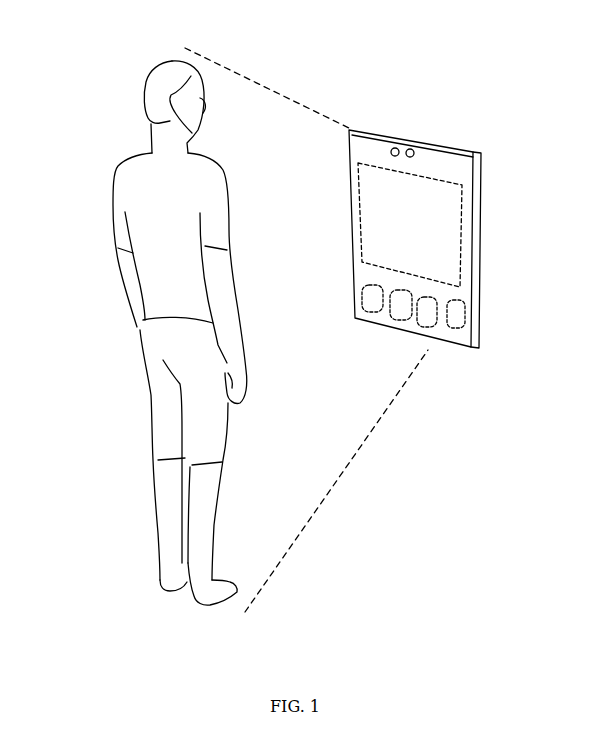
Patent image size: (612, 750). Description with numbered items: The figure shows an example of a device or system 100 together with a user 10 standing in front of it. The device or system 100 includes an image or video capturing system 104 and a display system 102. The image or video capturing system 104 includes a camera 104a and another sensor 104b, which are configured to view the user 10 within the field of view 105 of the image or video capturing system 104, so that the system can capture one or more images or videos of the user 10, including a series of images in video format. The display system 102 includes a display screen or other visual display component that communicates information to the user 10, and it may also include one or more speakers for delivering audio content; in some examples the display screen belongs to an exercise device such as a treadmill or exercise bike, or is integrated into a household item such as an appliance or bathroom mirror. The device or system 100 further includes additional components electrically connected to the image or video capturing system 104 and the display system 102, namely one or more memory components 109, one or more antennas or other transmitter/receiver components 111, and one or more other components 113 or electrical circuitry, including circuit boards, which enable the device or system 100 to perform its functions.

The user 10 is at (97, 128).
The device or system 100 is at (440, 213).
The display system 102 is at (443, 225).
The image or video capturing system 104 is at (420, 90).
The camera 104a is at (393, 146).
The other sensor 104b is at (433, 123).
The field of view 105 is at (267, 98).
The memory component 109 is at (423, 320).
The antenna or other transmitter/receiver component 111 is at (392, 318).
The other component or electrical circuitry 113 is at (365, 303).